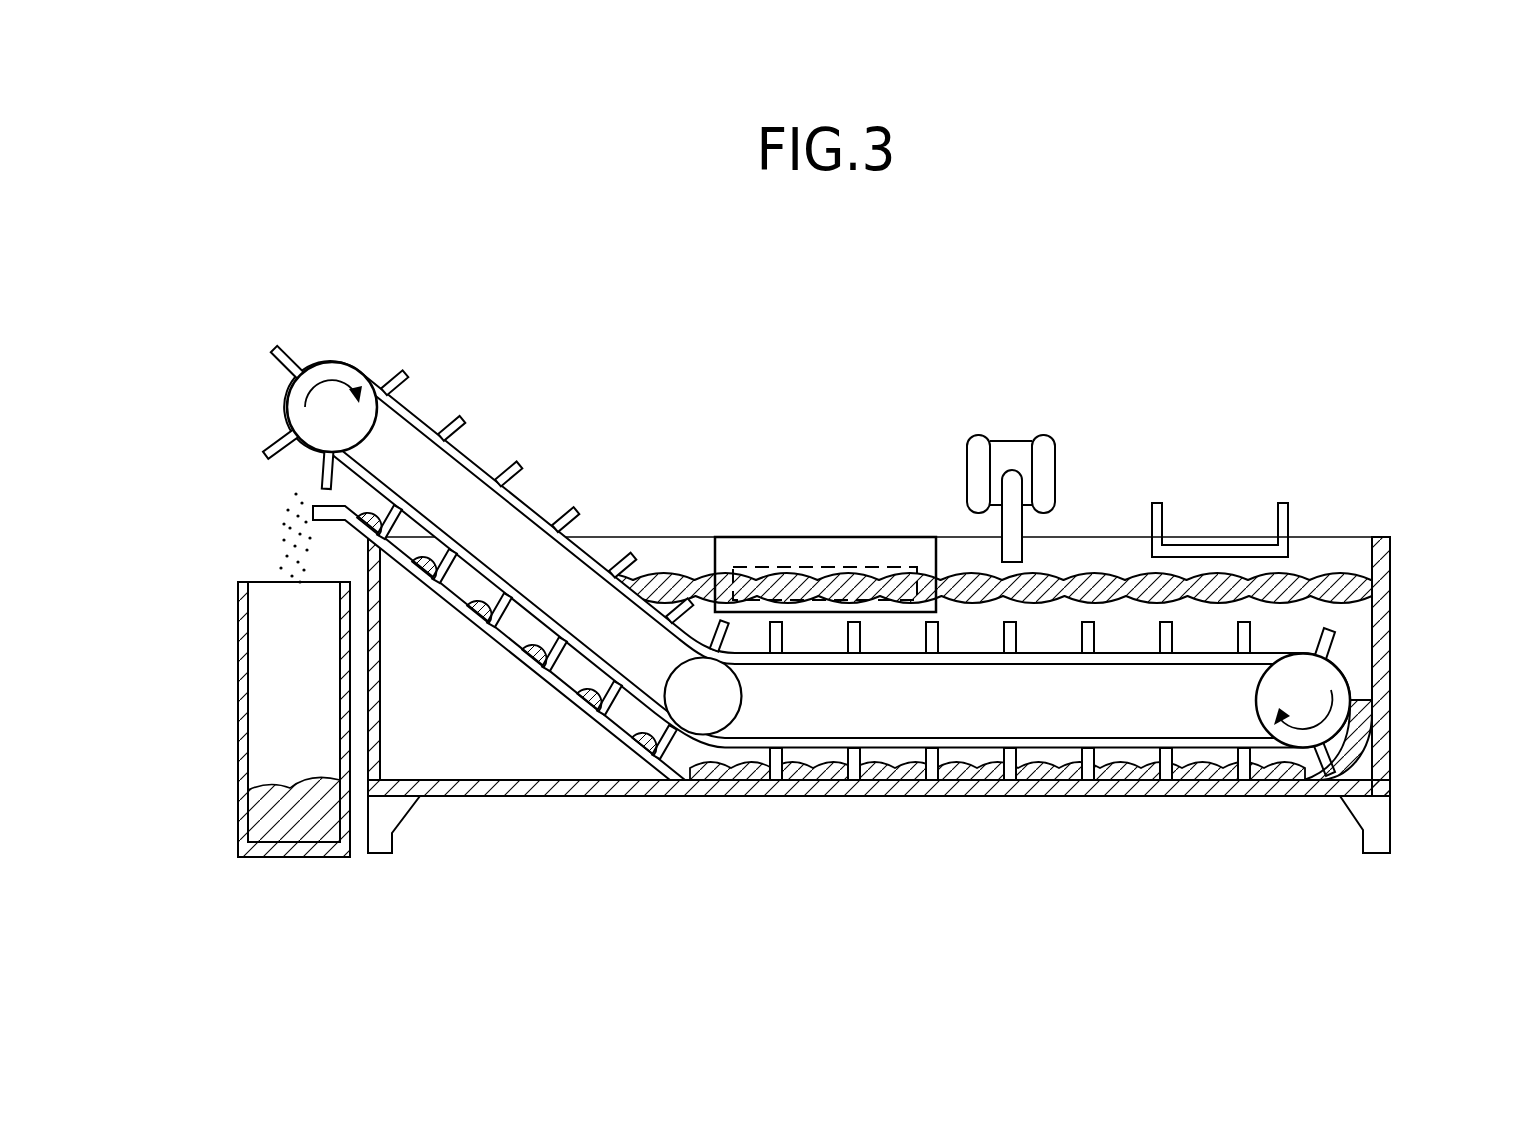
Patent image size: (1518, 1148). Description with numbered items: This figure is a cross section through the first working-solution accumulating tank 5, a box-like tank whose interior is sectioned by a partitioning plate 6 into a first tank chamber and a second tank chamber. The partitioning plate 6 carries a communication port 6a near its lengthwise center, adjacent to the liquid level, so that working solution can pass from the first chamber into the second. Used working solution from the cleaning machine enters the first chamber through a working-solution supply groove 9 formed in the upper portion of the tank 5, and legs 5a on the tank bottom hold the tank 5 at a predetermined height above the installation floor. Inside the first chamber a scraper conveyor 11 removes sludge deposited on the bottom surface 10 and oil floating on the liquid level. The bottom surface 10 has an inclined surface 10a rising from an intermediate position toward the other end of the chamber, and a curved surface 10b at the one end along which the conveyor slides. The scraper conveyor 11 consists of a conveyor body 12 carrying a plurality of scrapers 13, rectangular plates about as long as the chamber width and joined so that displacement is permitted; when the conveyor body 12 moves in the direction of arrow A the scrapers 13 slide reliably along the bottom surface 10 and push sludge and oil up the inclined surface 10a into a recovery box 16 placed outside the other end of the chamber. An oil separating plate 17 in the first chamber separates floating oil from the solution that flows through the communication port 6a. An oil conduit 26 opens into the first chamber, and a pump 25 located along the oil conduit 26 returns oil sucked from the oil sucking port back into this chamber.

The first working-solution accumulating tank 5 is at (1390, 627).
The legs 5a is at (400, 815).
The partitioning plate 6 is at (958, 556).
The communication port 6a is at (826, 567).
The working-solution supply groove 9 is at (1230, 548).
The bottom surface 10 is at (918, 780).
The inclined surface 10a is at (540, 680).
The curved surface 10b is at (1372, 765).
The scraper conveyor 11 is at (806, 498).
The conveyor body 12 is at (527, 505).
The scrapers 13 is at (450, 410).
The recovery box 16 is at (240, 668).
The oil separating plate 17 is at (730, 550).
The pump 25 is at (1045, 455).
The oil conduit 26 is at (1015, 545).